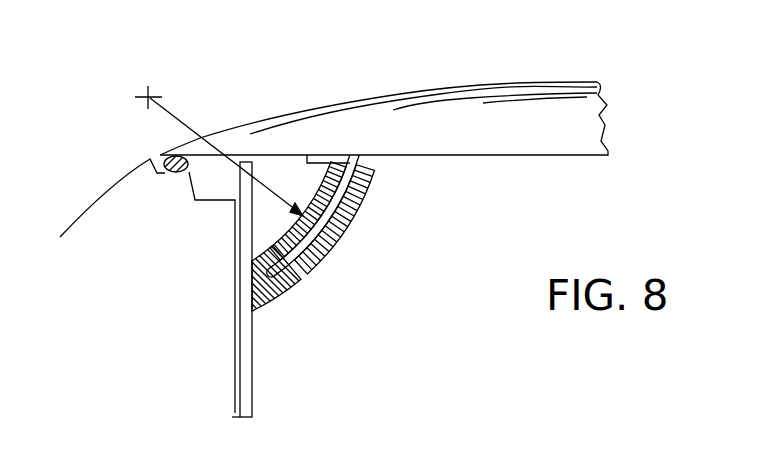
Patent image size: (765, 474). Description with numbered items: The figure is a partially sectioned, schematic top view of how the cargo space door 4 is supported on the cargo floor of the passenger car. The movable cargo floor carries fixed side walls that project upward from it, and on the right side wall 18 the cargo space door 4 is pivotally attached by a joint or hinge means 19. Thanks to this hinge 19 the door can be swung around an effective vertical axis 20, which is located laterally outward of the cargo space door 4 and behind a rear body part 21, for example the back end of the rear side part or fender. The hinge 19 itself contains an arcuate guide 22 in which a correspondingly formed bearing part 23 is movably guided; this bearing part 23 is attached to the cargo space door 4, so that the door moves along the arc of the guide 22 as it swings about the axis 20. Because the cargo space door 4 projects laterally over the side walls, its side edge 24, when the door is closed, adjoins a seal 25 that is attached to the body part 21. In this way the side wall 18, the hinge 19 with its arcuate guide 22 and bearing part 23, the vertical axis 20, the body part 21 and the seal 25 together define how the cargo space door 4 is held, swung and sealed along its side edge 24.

The cargo space door 4 is at (527, 108).
The side wall 18 is at (246, 390).
The hinge 19 is at (343, 240).
The effective vertical axis 20 is at (150, 98).
The rear body part 21 is at (100, 222).
The arcuate guide 22 is at (307, 262).
The bearing part 23 is at (345, 204).
The side edge 24 is at (182, 153).
The seal 25 is at (184, 178).